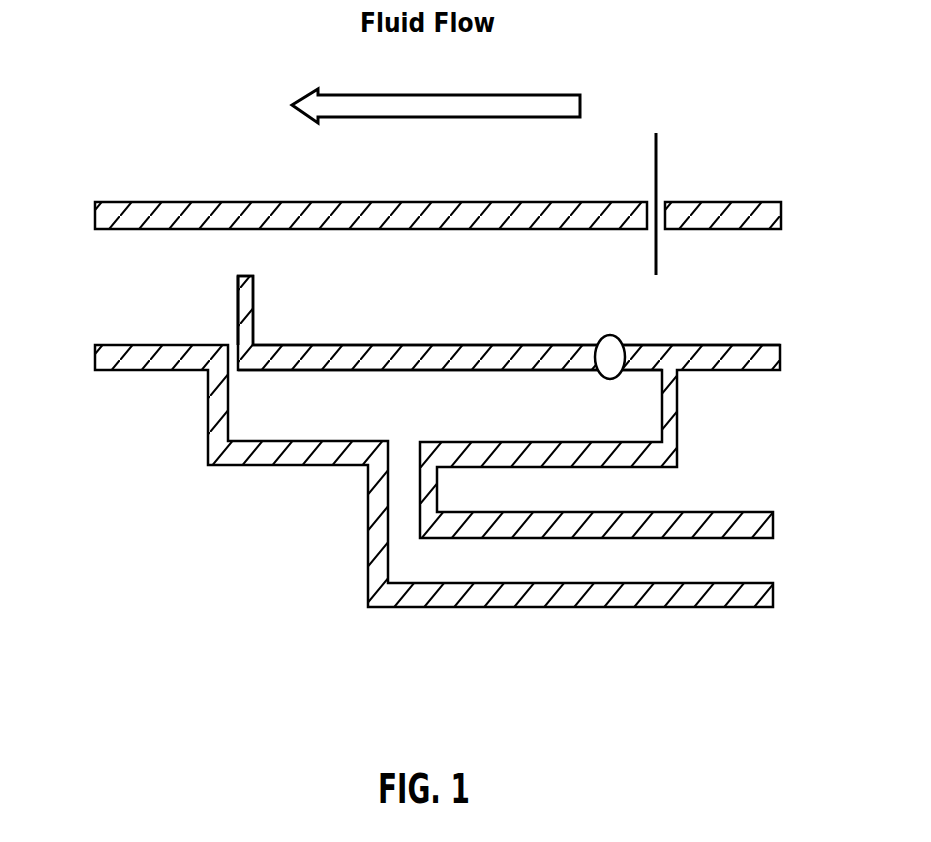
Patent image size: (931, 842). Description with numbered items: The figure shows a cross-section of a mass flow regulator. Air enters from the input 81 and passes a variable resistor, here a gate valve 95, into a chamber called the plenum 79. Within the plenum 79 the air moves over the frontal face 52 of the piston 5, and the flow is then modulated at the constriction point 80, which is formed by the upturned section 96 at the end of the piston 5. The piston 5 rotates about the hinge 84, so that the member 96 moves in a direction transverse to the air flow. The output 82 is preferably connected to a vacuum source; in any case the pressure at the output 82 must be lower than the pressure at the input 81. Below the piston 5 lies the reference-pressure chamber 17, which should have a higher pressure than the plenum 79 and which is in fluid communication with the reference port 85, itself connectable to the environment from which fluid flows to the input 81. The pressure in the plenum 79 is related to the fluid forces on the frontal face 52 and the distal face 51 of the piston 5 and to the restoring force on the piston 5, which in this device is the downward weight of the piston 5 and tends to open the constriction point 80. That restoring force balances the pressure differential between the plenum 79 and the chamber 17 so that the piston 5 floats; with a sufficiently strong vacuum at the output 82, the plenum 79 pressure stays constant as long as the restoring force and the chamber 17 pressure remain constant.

The piston 5 is at (516, 360).
The reference-pressure chamber 17 is at (506, 418).
The distal face 51 is at (384, 371).
The frontal face 52 is at (298, 345).
The plenum 79 is at (474, 298).
The constriction point 80 is at (248, 293).
The input 81 is at (791, 308).
The output 82 is at (111, 300).
The hinge 84 is at (593, 374).
The reference port 85 is at (820, 580).
The gate valve 95 is at (656, 178).
The upturned section 96 is at (246, 293).